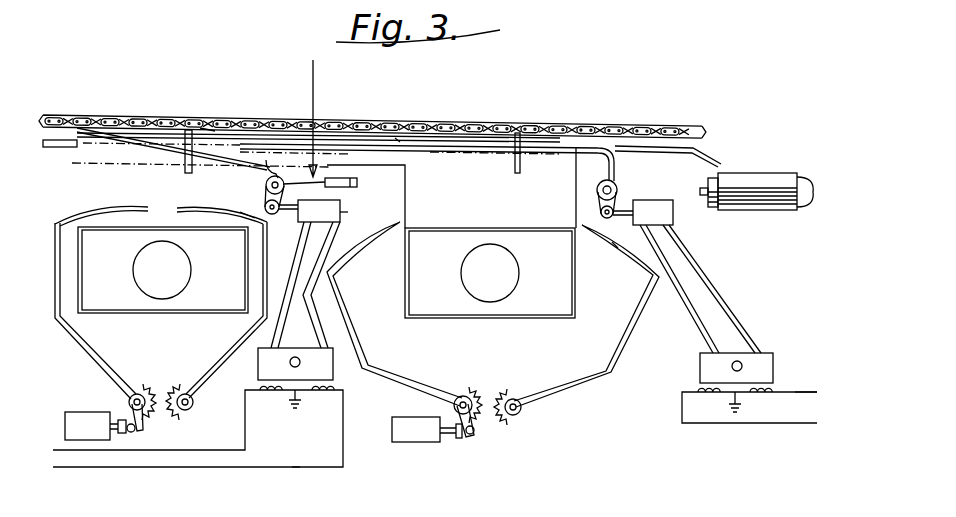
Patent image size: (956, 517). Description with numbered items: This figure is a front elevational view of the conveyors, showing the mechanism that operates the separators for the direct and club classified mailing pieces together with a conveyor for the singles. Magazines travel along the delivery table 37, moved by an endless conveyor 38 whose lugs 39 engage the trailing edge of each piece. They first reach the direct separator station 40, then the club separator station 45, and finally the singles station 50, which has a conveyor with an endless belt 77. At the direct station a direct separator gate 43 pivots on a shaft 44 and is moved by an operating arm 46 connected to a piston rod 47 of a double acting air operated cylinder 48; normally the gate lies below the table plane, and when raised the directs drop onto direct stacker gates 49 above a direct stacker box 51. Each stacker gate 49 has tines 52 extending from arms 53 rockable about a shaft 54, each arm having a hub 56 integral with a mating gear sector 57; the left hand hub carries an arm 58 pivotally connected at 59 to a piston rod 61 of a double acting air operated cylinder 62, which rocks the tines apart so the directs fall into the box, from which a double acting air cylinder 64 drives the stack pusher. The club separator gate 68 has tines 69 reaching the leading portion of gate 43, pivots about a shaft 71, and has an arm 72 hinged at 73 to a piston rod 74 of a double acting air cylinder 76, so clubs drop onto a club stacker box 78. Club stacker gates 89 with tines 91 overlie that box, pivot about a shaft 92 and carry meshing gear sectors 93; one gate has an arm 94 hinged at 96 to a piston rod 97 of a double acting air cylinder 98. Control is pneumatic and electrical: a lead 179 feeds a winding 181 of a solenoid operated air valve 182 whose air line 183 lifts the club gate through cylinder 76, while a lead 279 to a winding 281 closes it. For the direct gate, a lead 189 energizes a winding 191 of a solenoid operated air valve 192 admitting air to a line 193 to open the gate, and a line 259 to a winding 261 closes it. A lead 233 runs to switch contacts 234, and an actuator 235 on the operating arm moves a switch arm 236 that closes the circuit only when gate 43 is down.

The delivery table 37 is at (77, 128).
The endless conveyor 38 is at (63, 140).
The lugs 39 is at (200, 128).
The direct separator station 40 is at (85, 53).
The direct separator gate 43 is at (157, 142).
The shaft 44 is at (277, 165).
The club separator station 45 is at (609, 90).
The operating arm 46 is at (242, 206).
The piston rod 47 is at (290, 215).
The double acting air operated cylinder 48 is at (340, 215).
The direct stacker gates 49 is at (87, 203).
The singles station 50 is at (782, 90).
The direct stacker box 51 is at (75, 302).
The tines 52 is at (123, 211).
The arms 53 is at (220, 348).
The shaft 54 is at (196, 404).
The hub 56 is at (143, 392).
The gear sector 57 is at (173, 417).
The arm 58 is at (143, 428).
The pivotal connection 59 is at (132, 435).
The piston rod 61 is at (115, 432).
The double acting air operated cylinder 62 is at (82, 418).
The double acting air cylinder 64 is at (510, 300).
The club separator gate 68 is at (519, 165).
The tines 69 is at (397, 140).
The shaft 71 is at (613, 187).
The arm 72 is at (598, 203).
The hinge connection 73 is at (605, 220).
The piston rod 74 is at (630, 202).
The double acting air cylinder 76 is at (675, 213).
The endless belt 77 is at (755, 173).
The club stacker box 78 is at (405, 297).
The club stacker gates 89 is at (430, 366).
The tines 91 is at (615, 245).
The shaft 92 is at (463, 395).
The gear sector 93 is at (483, 390).
The arm 94 is at (476, 428).
The hinge connection 96 is at (466, 436).
The piston rod 97 is at (448, 443).
The double acting air cylinder 98 is at (393, 442).
The lead 179 is at (795, 393).
The winding 181 is at (758, 400).
The solenoid operated air valve 182 is at (773, 358).
The air line 183 is at (727, 305).
The lead 189 is at (292, 468).
The winding 191 is at (328, 395).
The solenoid operated air valve 192 is at (307, 335).
The line 193 is at (320, 315).
The lead 233 is at (315, 95).
The switch contacts 234 is at (328, 167).
The actuator 235 is at (340, 203).
The switch arm 236 is at (357, 183).
The line 259 is at (245, 450).
The winding 261 is at (262, 393).
The lead 279 is at (725, 425).
The winding 281 is at (700, 400).